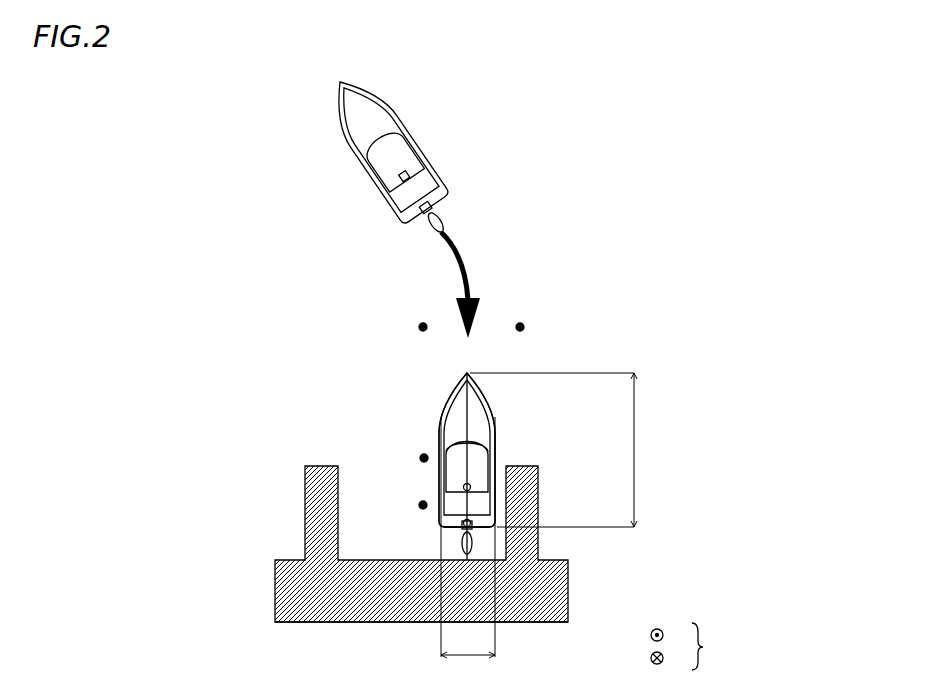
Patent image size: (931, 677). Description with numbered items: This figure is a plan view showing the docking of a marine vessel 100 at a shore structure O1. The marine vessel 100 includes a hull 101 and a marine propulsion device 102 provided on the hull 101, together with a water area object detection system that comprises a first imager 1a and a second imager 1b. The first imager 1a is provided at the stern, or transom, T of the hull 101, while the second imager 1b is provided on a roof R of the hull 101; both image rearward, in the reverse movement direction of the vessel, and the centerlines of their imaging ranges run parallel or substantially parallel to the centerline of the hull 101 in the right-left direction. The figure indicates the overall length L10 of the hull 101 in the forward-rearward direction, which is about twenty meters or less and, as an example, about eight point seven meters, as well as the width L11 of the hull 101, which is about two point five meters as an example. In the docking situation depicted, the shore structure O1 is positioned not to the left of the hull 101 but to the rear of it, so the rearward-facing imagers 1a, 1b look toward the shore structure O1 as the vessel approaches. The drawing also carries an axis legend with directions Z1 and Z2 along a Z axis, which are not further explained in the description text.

The marine vessel 100 is at (340, 70).
The hull 101 is at (443, 415).
The marine propulsion device 102 is at (442, 622).
The first imager 1a is at (463, 522).
The second imager 1b is at (463, 487).
The shore structure O1 is at (570, 573).
The roof R is at (446, 452).
The stern (transom) T is at (449, 530).
The overall length L10 is at (553, 450).
The width L11 is at (468, 537).
The Z1 direction Z1 is at (670, 636).
The Z2 direction Z2 is at (670, 659).
The Z axis Z is at (702, 646).